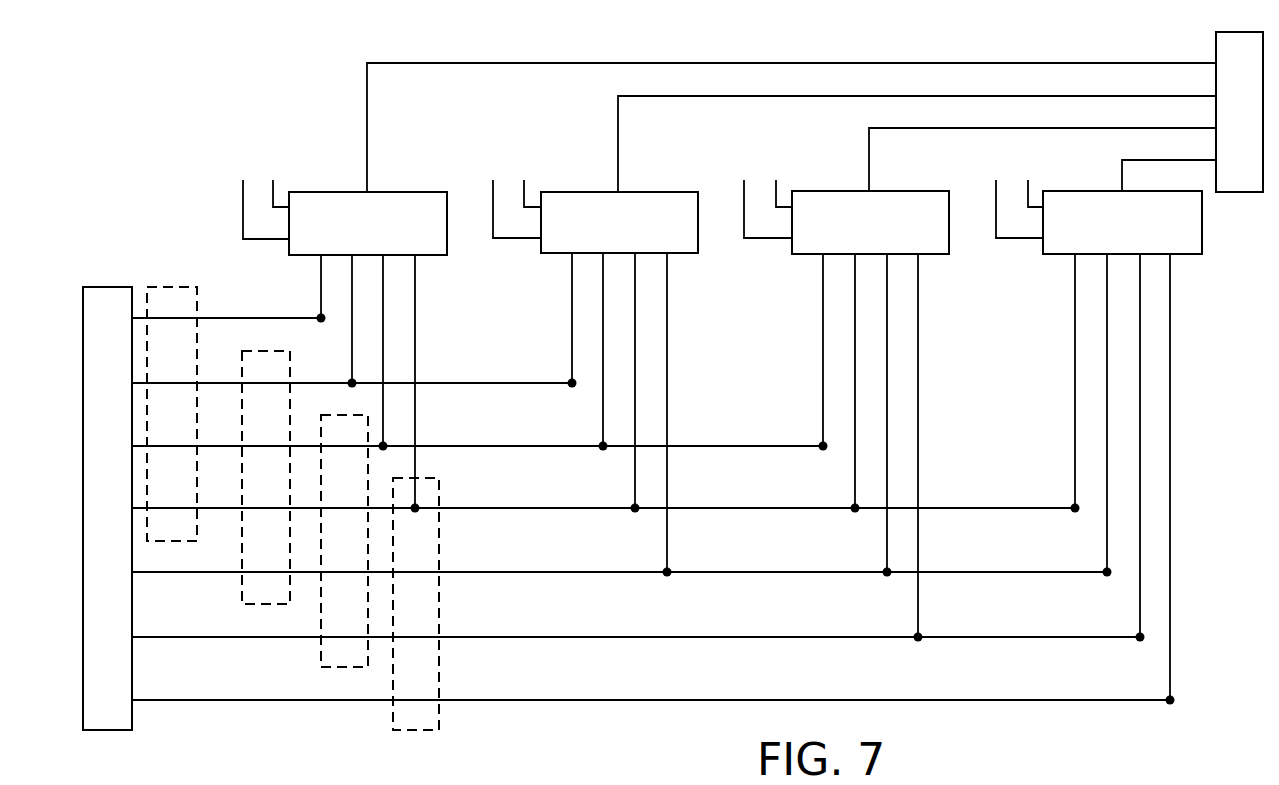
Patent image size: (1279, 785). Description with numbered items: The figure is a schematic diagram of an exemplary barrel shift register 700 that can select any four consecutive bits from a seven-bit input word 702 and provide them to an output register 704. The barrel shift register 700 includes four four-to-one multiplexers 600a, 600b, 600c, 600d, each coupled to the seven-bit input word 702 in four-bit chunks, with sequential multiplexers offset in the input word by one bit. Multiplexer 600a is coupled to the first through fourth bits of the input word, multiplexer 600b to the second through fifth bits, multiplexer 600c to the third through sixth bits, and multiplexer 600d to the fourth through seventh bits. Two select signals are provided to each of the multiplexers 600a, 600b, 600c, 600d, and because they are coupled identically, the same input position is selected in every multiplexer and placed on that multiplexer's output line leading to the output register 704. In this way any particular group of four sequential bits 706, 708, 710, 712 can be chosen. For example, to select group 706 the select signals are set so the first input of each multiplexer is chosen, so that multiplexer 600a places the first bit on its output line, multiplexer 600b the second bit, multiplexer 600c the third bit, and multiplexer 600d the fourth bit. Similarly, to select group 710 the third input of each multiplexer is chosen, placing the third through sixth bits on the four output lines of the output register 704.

The barrel shift register 700 is at (986, 42).
The 7-bit input word 702 is at (113, 285).
The output register 704 is at (1213, 38).
The multiplexer 600a is at (340, 333).
The multiplexer 600b is at (590, 365).
The multiplexer 600c is at (841, 397).
The multiplexer 600d is at (1094, 429).
The group of four bits 706 is at (170, 287).
The group of four bits 708 is at (258, 347).
The group of four bits 710 is at (338, 669).
The group of four bits 712 is at (432, 732).